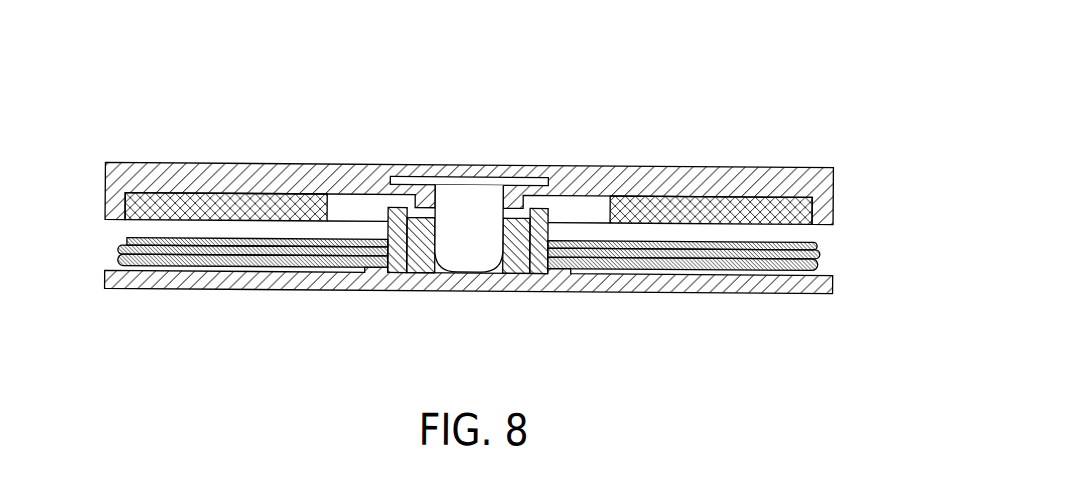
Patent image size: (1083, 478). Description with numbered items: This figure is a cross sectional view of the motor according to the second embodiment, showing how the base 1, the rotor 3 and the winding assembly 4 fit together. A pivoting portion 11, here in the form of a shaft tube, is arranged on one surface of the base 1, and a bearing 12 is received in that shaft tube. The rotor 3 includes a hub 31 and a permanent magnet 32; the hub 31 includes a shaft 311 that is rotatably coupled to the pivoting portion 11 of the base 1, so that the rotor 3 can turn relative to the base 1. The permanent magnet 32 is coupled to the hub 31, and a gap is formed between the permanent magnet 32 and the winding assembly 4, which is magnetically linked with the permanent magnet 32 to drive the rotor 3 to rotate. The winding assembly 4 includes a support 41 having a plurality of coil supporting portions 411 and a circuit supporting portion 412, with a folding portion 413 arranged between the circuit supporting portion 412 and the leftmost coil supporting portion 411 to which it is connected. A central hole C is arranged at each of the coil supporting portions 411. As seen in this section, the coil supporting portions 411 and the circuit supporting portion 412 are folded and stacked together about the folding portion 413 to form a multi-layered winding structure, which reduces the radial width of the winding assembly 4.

The base 1 is at (584, 317).
The pivoting portion 11 is at (397, 206).
The bearing 12 is at (419, 250).
The rotor 3 is at (469, 205).
The hub 31 is at (750, 175).
The permanent magnet 32 is at (691, 206).
The shaft 311 is at (477, 248).
The central hole C is at (543, 244).
The winding assembly 4 is at (847, 234).
The support 41 is at (232, 178).
The coil supporting portions 411 is at (267, 257).
The circuit supporting portion 412 is at (196, 269).
The folding portion 413 is at (118, 264).